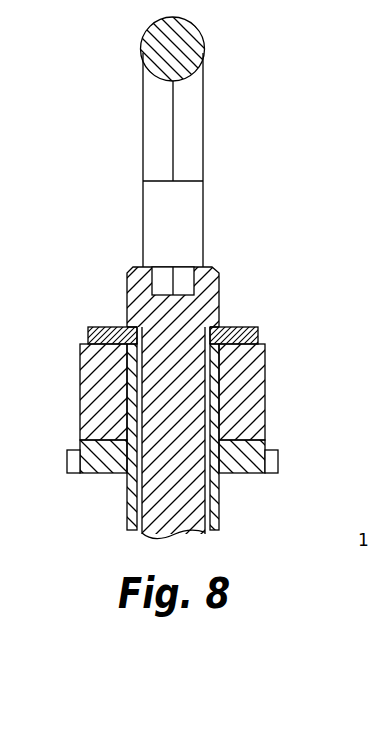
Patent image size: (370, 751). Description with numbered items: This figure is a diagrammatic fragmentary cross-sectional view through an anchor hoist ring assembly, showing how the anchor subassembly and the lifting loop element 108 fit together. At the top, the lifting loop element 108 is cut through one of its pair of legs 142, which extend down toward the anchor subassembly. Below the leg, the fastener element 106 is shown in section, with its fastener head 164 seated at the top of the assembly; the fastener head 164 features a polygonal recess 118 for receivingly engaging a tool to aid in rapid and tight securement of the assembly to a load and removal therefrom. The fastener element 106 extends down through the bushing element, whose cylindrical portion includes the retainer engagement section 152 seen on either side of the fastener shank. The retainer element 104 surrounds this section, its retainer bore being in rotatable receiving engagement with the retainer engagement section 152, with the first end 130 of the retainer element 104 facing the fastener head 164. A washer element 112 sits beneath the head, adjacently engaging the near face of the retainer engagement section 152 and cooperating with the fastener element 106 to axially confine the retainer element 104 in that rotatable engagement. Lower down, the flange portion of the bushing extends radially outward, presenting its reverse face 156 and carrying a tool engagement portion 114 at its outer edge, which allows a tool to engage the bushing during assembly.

The lifting loop element 108 is at (203, 45).
The leg 142 is at (143, 197).
The polygonal recess 118 is at (165, 276).
The fastener head 164 is at (186, 276).
The first end 130 is at (88, 338).
The washer element 112 is at (250, 326).
The retainer element 104 is at (262, 380).
The retainer engagement section 152 is at (215, 402).
The tool engagement portion 114 is at (274, 460).
The fastener element 106 is at (170, 502).
The reverse face 156 is at (208, 482).